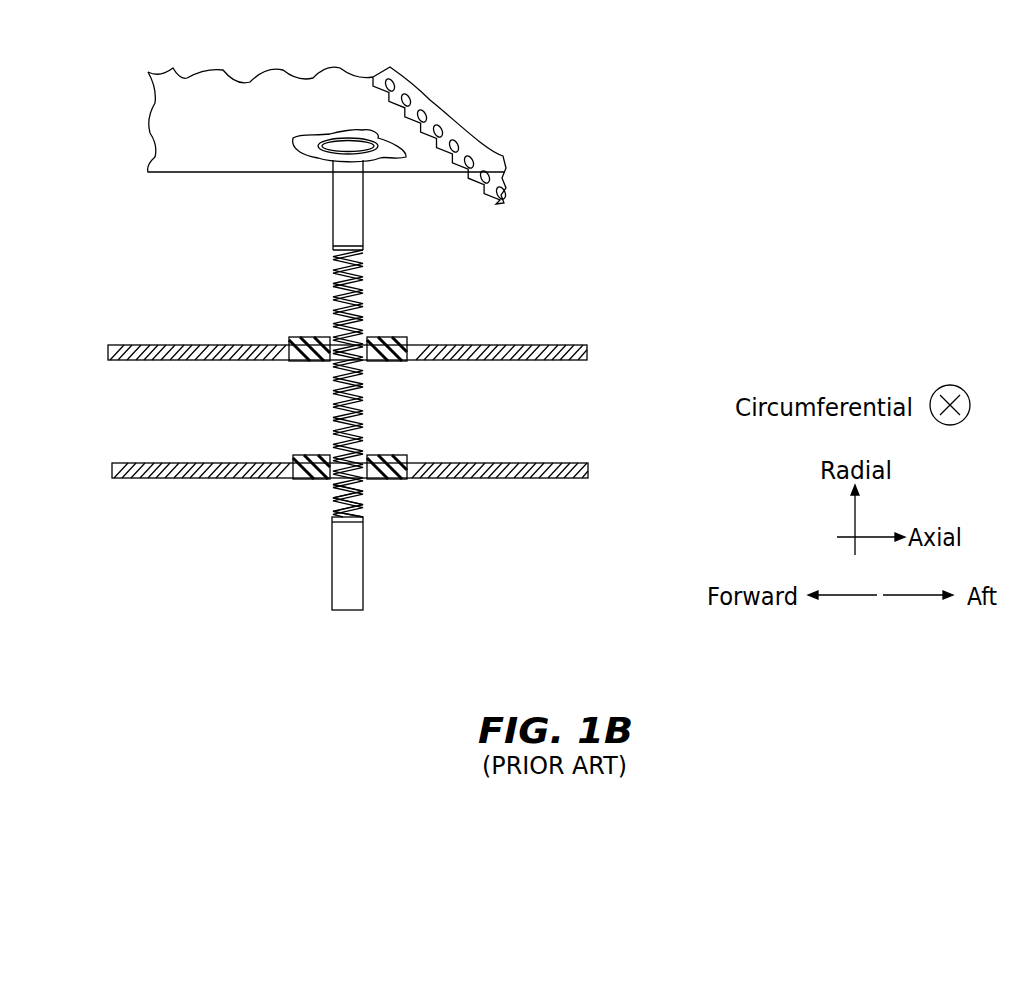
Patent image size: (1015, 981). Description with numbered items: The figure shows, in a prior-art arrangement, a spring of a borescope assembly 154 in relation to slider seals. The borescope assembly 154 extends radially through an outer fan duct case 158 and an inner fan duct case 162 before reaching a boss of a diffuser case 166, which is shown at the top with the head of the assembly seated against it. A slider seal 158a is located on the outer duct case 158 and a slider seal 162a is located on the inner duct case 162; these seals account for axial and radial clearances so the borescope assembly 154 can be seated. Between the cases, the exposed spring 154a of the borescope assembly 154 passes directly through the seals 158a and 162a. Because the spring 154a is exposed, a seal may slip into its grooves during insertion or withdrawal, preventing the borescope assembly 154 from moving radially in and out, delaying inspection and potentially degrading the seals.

The borescope assembly 154 is at (367, 227).
The exposed spring 154a is at (337, 502).
The outer fan duct case 158 is at (555, 478).
The slider seal 158a is at (393, 480).
The inner fan duct case 162 is at (557, 345).
The slider seal 162a is at (303, 337).
The diffuser case 166 is at (285, 172).